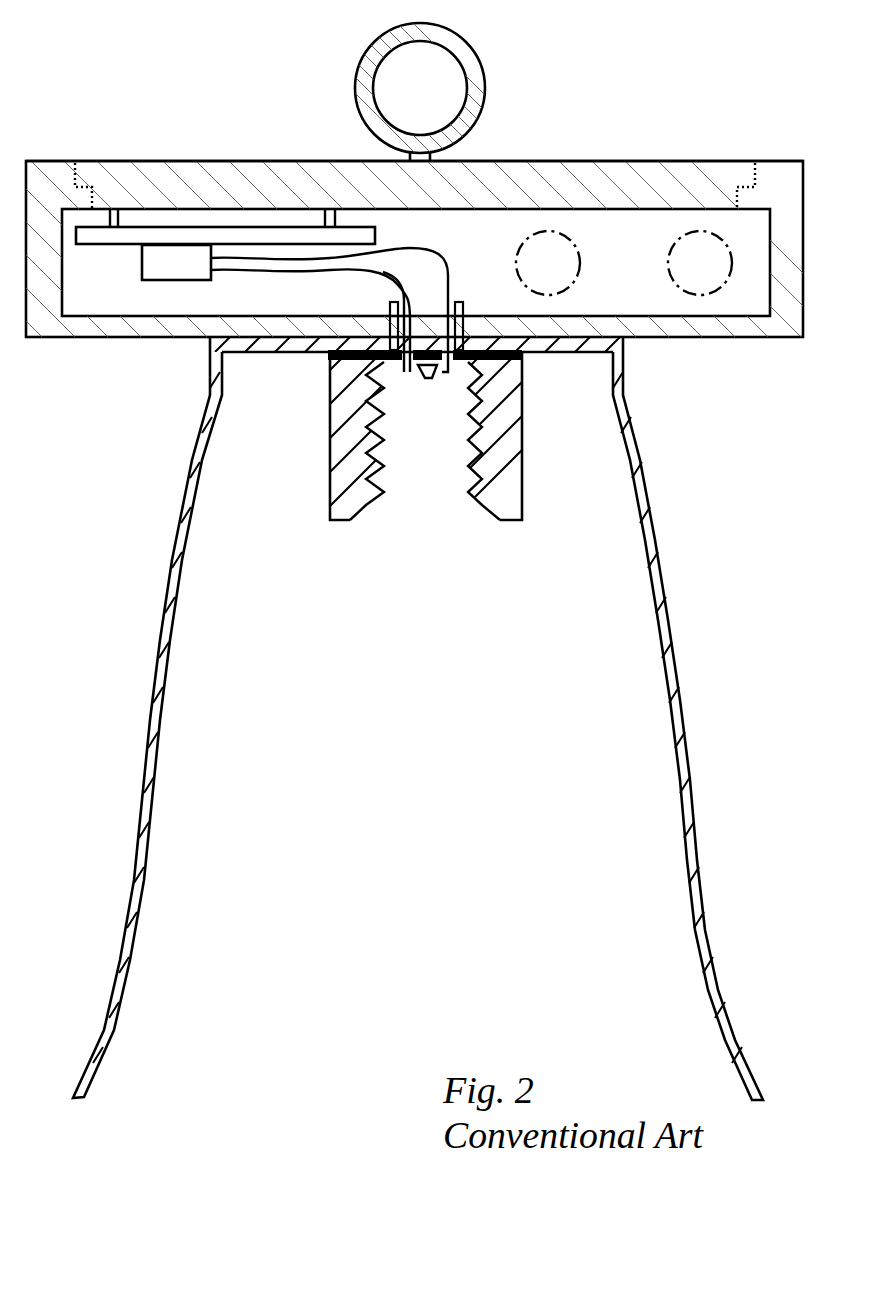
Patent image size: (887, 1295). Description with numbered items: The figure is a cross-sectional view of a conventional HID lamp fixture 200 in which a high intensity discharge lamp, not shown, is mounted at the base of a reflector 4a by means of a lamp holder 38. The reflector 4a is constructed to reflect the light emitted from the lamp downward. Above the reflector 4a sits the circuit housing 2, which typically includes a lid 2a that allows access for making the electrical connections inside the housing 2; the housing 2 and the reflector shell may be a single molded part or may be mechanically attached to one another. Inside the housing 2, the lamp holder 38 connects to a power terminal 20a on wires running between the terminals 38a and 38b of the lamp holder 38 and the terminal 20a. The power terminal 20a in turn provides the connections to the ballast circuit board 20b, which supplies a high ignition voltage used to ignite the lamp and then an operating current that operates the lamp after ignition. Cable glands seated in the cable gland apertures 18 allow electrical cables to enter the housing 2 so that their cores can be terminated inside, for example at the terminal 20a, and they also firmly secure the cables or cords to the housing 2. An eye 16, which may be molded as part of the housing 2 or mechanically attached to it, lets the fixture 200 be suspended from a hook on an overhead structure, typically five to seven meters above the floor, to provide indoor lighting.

The housing 2 is at (80, 337).
The lid 2a is at (527, 183).
The eye 16 is at (474, 52).
The cable gland apertures 18 is at (673, 270).
The power terminal 20a is at (295, 308).
The ballast circuit board 20b is at (375, 236).
The reflector 4a is at (651, 482).
The lamp holder 38 is at (500, 521).
The terminal 38a is at (429, 377).
The terminal 38b is at (394, 372).
The HID lamp fixture 200 is at (323, 1020).